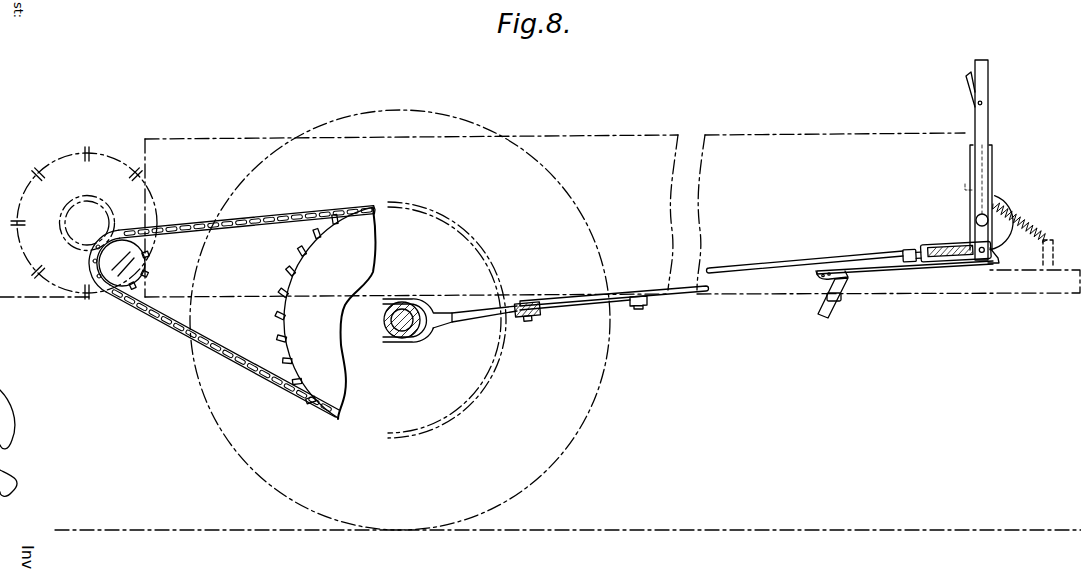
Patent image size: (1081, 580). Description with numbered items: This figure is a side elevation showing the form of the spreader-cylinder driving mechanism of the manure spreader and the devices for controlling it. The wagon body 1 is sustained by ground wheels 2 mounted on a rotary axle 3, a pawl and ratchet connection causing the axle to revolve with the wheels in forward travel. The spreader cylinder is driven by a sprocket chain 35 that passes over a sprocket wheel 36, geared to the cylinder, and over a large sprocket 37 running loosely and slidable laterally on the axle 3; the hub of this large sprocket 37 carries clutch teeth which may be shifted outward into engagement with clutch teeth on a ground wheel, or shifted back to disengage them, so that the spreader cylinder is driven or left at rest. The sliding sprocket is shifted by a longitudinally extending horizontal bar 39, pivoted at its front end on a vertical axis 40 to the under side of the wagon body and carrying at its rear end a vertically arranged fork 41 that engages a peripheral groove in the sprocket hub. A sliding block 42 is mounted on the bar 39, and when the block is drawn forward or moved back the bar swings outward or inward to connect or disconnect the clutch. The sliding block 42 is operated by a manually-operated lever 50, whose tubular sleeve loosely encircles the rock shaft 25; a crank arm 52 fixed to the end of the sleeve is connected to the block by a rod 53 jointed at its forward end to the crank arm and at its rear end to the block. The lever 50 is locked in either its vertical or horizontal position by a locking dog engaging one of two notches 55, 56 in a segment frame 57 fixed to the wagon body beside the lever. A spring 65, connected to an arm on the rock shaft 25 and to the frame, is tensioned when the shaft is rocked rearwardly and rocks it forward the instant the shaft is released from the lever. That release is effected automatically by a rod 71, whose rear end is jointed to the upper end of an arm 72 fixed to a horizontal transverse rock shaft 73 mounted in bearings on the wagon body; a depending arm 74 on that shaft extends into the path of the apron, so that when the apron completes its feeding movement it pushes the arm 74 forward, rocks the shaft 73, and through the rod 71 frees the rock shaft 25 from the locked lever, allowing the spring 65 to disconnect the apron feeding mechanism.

The wagon body 1 is at (609, 157).
The ground wheels 2 is at (398, 118).
The rotary axle 3 is at (384, 328).
The rock shaft 25 is at (980, 215).
The sprocket chain 35 is at (199, 224).
The sprocket wheel 36 is at (128, 280).
The large sprocket 37 is at (303, 308).
The horizontal bar 39 is at (485, 317).
The vertical axis 40 is at (645, 305).
The fork 41 is at (409, 300).
The sliding block 42 is at (541, 316).
The manually-operated lever 50 is at (983, 118).
The crank arm 52 is at (972, 232).
The rod 53 is at (590, 296).
The notch 55 is at (994, 168).
The notch 56 is at (1013, 215).
The segment frame 57 is at (1005, 190).
The spring 65 is at (1046, 240).
The rod 71 is at (903, 268).
The arm 72 is at (824, 283).
The rock shaft 73 is at (836, 300).
The depending arm 74 is at (828, 306).